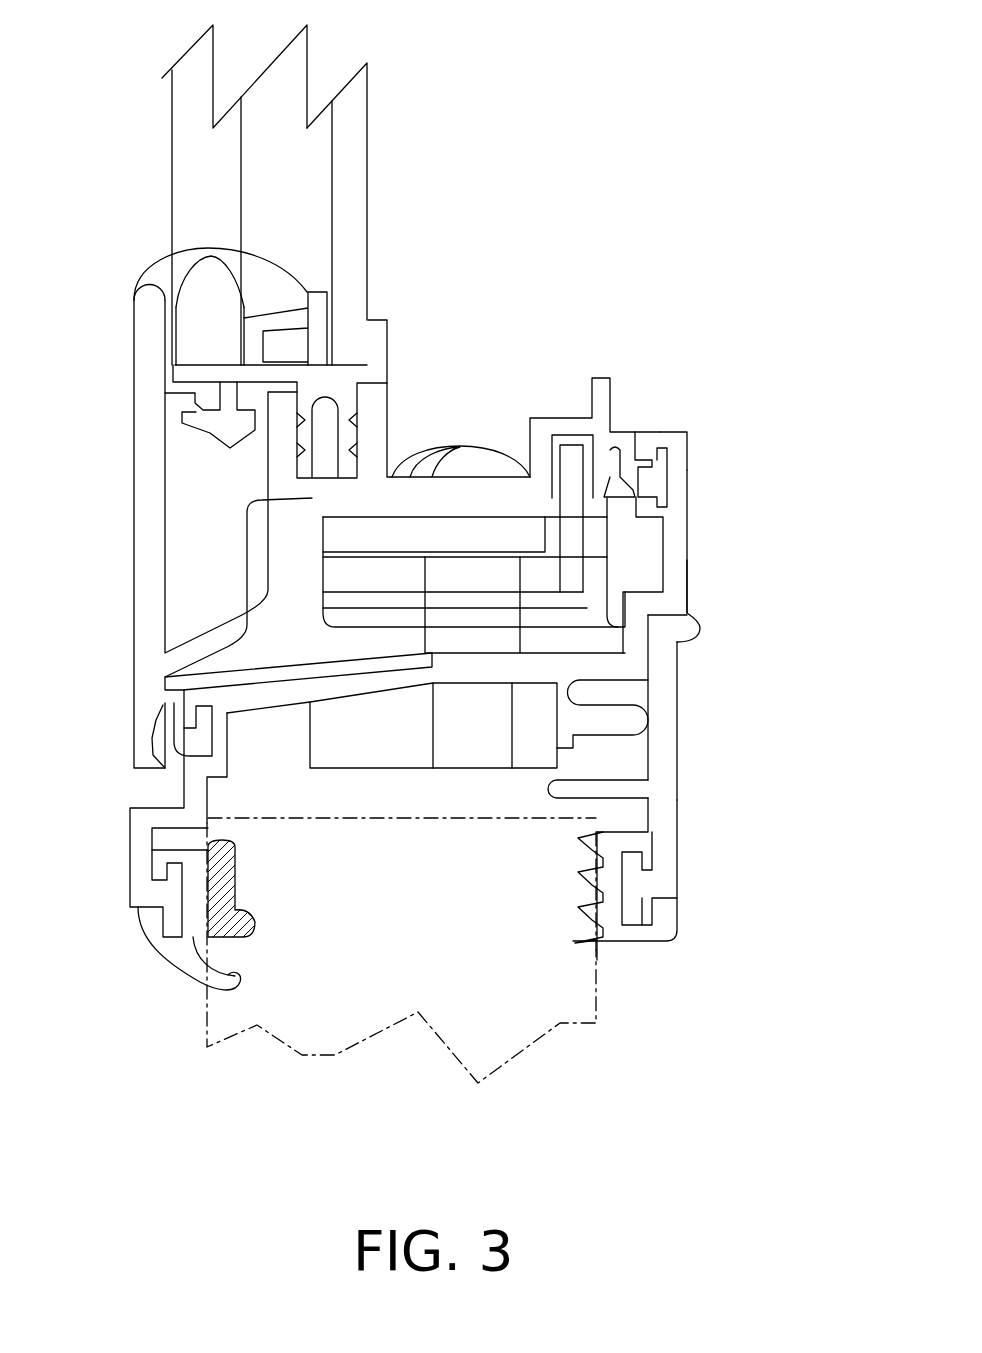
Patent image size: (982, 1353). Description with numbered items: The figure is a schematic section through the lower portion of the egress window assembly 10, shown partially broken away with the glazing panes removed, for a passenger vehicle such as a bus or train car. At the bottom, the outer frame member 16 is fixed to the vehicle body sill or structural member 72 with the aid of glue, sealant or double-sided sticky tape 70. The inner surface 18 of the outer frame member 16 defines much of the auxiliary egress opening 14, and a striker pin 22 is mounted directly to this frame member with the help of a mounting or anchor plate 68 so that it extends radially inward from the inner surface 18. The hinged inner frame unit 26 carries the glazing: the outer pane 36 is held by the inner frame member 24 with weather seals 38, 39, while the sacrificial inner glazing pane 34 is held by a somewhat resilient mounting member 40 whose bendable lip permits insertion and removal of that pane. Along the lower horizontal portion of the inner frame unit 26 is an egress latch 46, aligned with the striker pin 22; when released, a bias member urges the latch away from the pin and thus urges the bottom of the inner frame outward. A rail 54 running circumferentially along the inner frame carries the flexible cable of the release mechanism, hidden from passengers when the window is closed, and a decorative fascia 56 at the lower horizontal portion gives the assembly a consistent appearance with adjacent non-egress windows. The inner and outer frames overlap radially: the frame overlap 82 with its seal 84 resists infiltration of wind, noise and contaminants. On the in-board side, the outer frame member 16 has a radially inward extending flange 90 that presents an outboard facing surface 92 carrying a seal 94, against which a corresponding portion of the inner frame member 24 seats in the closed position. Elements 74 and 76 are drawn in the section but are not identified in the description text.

The egress window assembly 10 is at (707, 964).
The auxiliary egress opening 14 is at (641, 430).
The outer frame member 16 is at (607, 667).
The inner surface 18 is at (293, 670).
The striker pin 22 is at (505, 640).
The inner frame member 24 is at (133, 307).
The inner frame unit 26 is at (545, 417).
The inner glazing pane 34 is at (353, 120).
The outer pane 36 is at (197, 70).
The weather seal 38 is at (163, 260).
The weather seal 39 is at (267, 280).
The resilient mounting member 40 is at (373, 378).
The egress latch 46 is at (680, 430).
The rail 54 is at (572, 460).
The decorative fascia 56 is at (663, 827).
The anchor plate 68 is at (530, 730).
The double-sided sticky tape 70 is at (237, 880).
The vehicle body sill 72 is at (315, 1045).
The sealing strip 74 is at (630, 945).
The hook 76 is at (183, 953).
The frame overlap 82 is at (147, 788).
The seal 84 is at (200, 743).
The radially inward extending flange 90 is at (688, 519).
The outboard facing surface 92 is at (620, 445).
The seal 94 is at (665, 470).